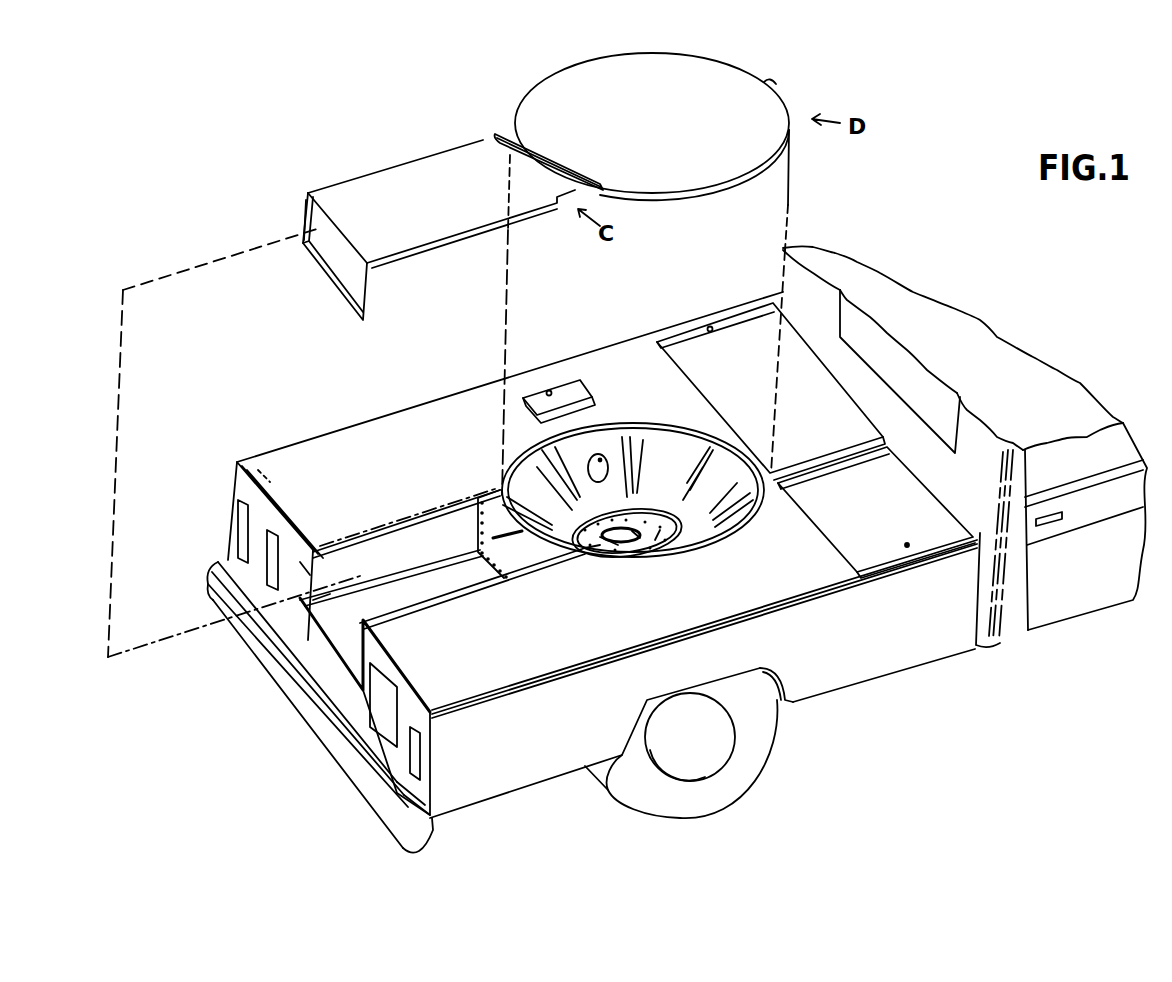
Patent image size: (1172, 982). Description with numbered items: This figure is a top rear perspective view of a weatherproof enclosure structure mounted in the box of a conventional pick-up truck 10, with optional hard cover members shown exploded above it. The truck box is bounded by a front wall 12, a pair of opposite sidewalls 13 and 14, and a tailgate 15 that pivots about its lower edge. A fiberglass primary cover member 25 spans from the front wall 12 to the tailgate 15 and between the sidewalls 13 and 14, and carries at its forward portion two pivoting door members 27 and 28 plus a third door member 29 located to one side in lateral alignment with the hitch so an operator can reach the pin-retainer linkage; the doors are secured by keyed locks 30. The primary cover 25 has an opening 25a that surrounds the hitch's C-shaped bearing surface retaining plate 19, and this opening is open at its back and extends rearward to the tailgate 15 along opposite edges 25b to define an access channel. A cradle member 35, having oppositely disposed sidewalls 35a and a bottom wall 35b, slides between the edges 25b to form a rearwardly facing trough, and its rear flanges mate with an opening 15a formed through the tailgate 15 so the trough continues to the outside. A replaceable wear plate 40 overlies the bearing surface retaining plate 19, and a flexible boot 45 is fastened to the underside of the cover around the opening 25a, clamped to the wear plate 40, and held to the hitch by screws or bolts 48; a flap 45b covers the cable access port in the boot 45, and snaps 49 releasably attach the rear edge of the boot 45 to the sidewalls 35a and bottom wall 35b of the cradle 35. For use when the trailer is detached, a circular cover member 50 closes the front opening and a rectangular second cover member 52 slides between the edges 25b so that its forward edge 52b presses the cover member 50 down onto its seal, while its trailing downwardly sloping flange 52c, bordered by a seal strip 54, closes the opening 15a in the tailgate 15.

The pick-up truck 10 is at (1003, 628).
The front wall 12 is at (983, 533).
The sidewall 13 is at (525, 775).
The sidewall 14 is at (237, 461).
The tailgate 15 is at (385, 715).
The opening 15a is at (307, 564).
The bearing surface retaining plate 19 is at (616, 544).
The primary cover member 25 is at (510, 502).
The opening 25a is at (685, 556).
The edges 25b is at (365, 535).
The door member 27 is at (683, 340).
The door member 28 is at (935, 503).
The third door member 29 is at (590, 389).
The keyed lock 30 is at (708, 326).
The cradle member 35 is at (399, 531).
The sidewalls 35a is at (397, 563).
The bottom wall 35b is at (348, 596).
The wear plate 40 is at (647, 525).
The boot 45 is at (633, 491).
The flap 45b is at (612, 462).
The screws or bolts 48 is at (660, 534).
The snaps 49 is at (480, 533).
The cover member 50 is at (725, 72).
The second cover member 52 is at (431, 208).
The forward edge 52b is at (490, 140).
The downwardly sloping flange 52c is at (333, 268).
The seal strip 54 is at (307, 218).